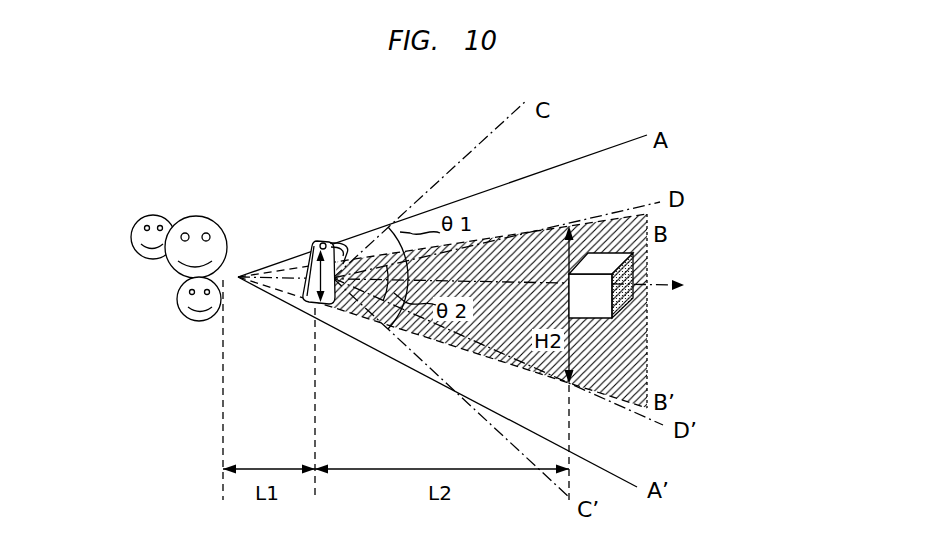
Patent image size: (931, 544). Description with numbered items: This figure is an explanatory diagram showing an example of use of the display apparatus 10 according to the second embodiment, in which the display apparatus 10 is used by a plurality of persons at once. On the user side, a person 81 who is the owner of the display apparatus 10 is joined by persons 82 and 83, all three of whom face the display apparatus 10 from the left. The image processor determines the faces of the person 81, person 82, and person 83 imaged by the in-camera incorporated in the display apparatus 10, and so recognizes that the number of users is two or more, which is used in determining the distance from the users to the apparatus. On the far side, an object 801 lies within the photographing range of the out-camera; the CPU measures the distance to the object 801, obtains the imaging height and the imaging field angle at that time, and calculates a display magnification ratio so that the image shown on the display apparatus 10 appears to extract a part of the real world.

The display apparatus 10 is at (338, 240).
The person 81 is at (205, 213).
The person 82 is at (156, 212).
The person 83 is at (193, 322).
The object 801 is at (637, 257).